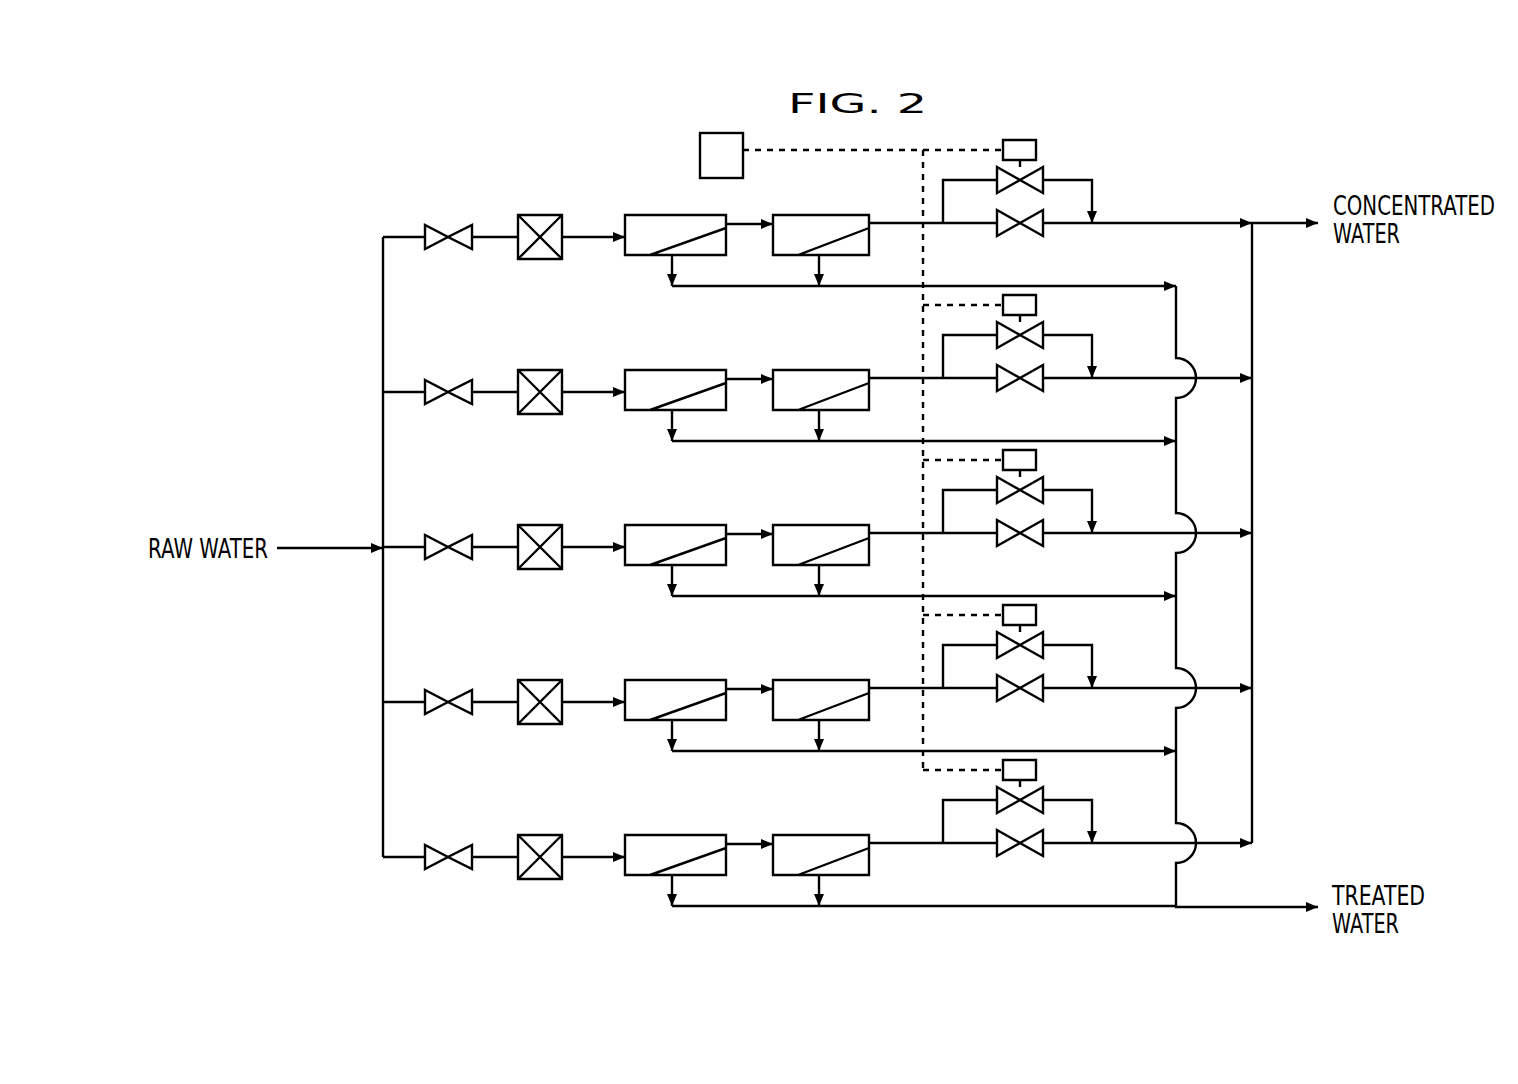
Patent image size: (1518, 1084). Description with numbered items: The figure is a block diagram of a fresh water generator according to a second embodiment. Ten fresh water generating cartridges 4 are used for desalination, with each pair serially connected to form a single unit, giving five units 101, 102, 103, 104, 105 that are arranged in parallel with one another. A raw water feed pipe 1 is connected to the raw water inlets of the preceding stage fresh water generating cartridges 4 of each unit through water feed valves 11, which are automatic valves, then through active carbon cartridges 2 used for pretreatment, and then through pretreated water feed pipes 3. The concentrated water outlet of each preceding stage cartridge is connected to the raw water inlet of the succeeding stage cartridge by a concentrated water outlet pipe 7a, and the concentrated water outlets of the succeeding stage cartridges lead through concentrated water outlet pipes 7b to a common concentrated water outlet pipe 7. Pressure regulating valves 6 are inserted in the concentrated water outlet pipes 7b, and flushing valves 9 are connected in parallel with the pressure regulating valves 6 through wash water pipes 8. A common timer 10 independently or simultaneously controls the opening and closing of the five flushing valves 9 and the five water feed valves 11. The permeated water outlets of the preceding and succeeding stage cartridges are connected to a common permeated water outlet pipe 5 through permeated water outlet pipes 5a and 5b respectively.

The raw water feed pipe 1 is at (305, 547).
The active carbon cartridge 2 is at (540, 259).
The pretreated water feed pipe 3 is at (583, 239).
The fresh water generating cartridge 4 is at (816, 214).
The permeated water outlet pipe 5 is at (1282, 909).
The permeated water outlet pipe 5a is at (680, 267).
The permeated water outlet pipe 5b is at (827, 267).
The pressure regulating valve 6 is at (1020, 236).
The concentrated water outlet pipe 7 is at (1287, 225).
The concentrated water outlet pipe 7a is at (745, 222).
The concentrated water outlet pipe 7b is at (887, 222).
The wash water pipe 8 is at (1095, 206).
The flushing valve 9 is at (1043, 184).
The timer 10 is at (700, 146).
The water feed valve 11 is at (442, 250).
The unit 101 is at (618, 200).
The unit 102 is at (618, 355).
The unit 103 is at (618, 510).
The unit 104 is at (618, 665).
The unit 105 is at (618, 820).